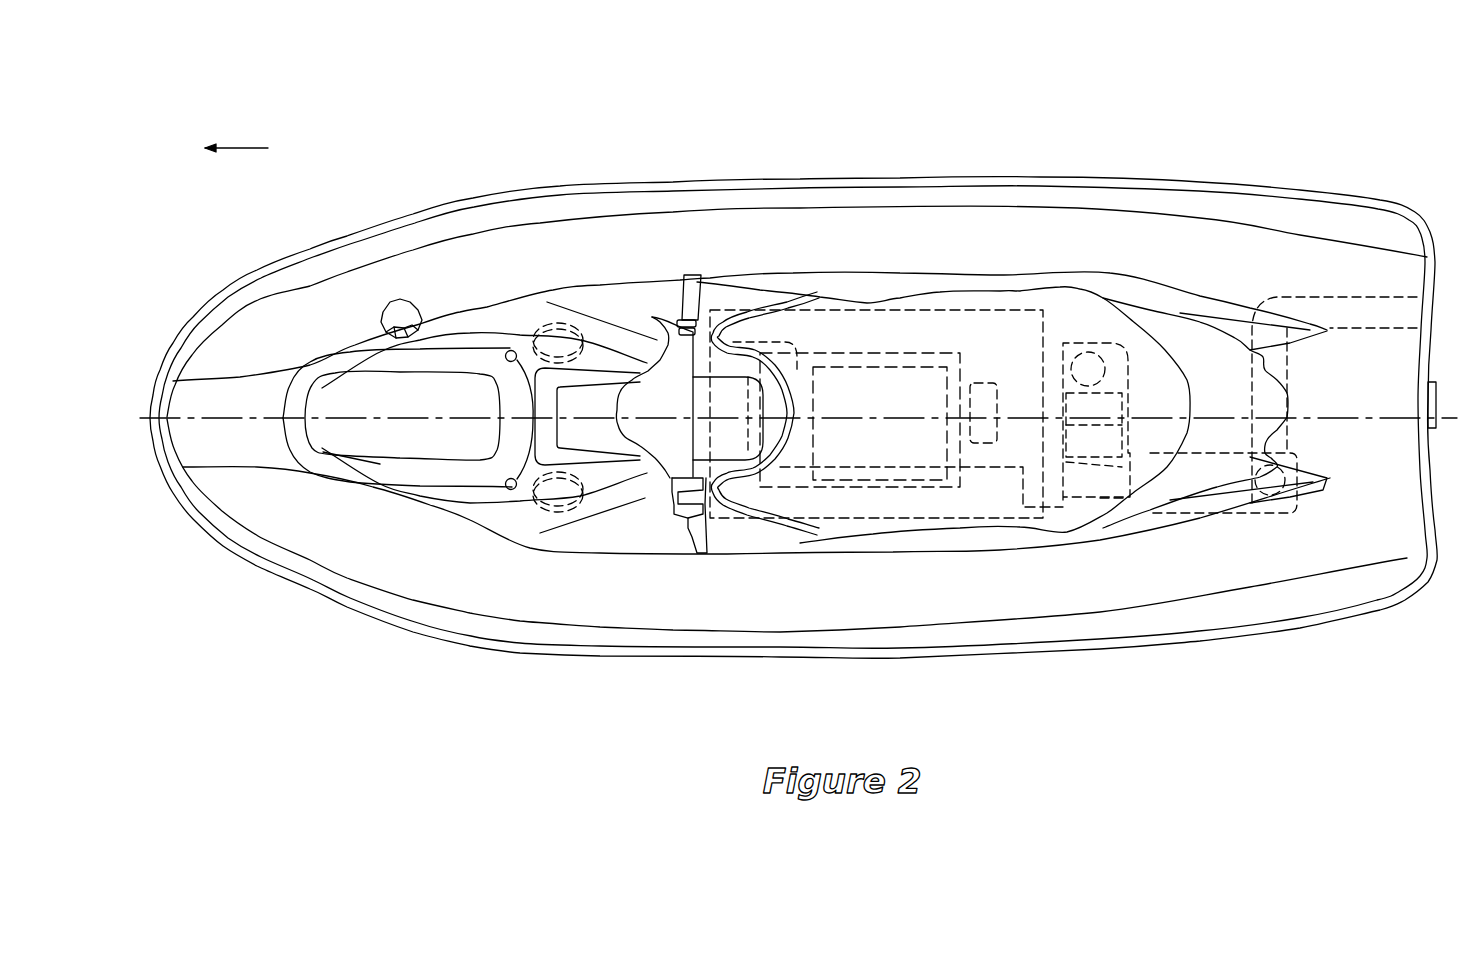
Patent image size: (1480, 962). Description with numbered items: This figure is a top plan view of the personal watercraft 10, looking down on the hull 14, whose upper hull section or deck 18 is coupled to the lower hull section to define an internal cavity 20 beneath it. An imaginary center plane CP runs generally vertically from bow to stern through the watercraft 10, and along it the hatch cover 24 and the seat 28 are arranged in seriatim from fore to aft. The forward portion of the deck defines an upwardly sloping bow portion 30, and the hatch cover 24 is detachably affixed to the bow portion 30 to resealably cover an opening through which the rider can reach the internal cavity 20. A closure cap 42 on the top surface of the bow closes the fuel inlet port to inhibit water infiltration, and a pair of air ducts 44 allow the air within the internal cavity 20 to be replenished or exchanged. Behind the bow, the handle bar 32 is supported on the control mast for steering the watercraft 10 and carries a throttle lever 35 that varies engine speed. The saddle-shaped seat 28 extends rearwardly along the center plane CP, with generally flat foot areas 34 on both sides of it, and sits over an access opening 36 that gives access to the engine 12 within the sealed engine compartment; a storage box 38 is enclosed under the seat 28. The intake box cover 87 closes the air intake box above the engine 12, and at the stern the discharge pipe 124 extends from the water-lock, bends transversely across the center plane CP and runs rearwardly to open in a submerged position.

The personal watercraft 10 is at (954, 123).
The engine 12 is at (933, 352).
The hull 14 is at (1020, 651).
The upper hull section 18 is at (1244, 583).
The internal cavity 20 is at (993, 350).
The hatch cover 24 is at (357, 400).
The seat 28 is at (897, 340).
The bow portion 30 is at (658, 525).
The handle bar 32 is at (701, 310).
The foot areas 34 is at (795, 228).
The throttle lever 35 is at (652, 316).
The access opening 36 is at (1020, 310).
The storage box 38 is at (1127, 403).
The closure cap 42 is at (404, 308).
The air ducts 44 is at (567, 323).
The intake box cover 87 is at (858, 365).
The discharge pipe 124 is at (1343, 297).
The center plane CP is at (1447, 403).